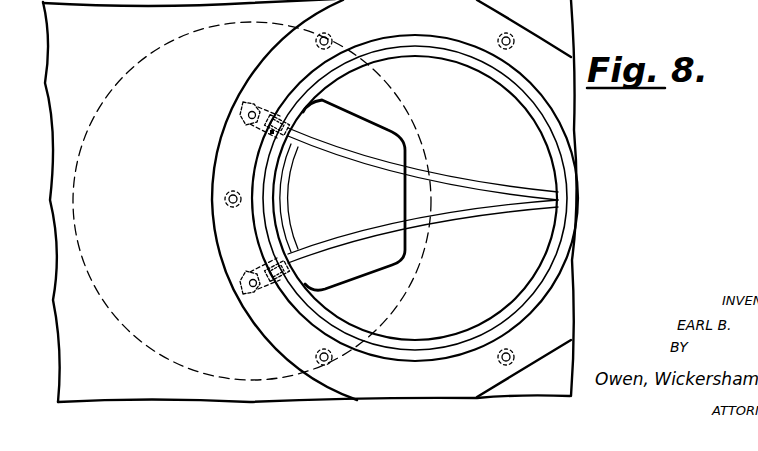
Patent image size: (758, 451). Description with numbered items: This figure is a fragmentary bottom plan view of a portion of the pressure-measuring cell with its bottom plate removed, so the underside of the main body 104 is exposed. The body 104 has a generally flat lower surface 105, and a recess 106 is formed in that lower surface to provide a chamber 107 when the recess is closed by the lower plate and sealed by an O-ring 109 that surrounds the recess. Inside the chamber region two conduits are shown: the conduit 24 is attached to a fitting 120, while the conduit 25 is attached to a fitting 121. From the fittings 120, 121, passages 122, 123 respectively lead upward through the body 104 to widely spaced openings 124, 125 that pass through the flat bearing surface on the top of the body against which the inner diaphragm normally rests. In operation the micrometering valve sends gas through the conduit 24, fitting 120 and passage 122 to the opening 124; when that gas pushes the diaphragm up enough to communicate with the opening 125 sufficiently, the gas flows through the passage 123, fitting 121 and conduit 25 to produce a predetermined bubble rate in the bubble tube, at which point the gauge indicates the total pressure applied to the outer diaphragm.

The main body 104 is at (562, 33).
The lower surface 105 is at (108, 56).
The recess 106 is at (553, 235).
The chamber 107 is at (545, 168).
The O-ring 109 is at (381, 42).
The fitting 120 is at (277, 140).
The fitting 121 is at (262, 268).
The passage 122 is at (247, 130).
The passage 123 is at (252, 290).
The opening 124 is at (243, 117).
The opening 125 is at (252, 297).
The conduit 24 is at (450, 173).
The conduit 25 is at (445, 222).